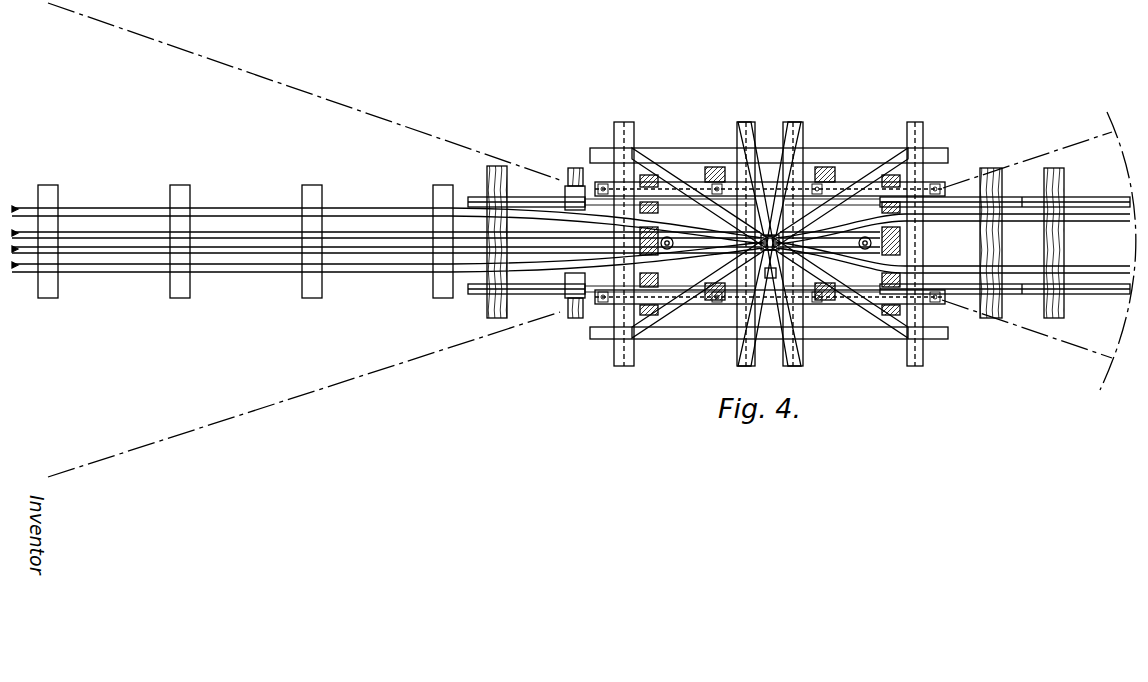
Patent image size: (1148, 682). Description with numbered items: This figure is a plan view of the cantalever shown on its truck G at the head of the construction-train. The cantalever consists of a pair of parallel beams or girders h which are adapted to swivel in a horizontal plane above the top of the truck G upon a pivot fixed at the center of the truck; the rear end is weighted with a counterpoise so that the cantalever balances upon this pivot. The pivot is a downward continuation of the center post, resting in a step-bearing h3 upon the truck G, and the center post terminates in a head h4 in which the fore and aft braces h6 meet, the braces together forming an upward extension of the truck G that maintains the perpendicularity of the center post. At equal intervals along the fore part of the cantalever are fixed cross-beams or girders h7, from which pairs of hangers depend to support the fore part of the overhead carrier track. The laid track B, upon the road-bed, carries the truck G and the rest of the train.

The parallel beams or girders h is at (245, 213).
The step-bearing h3 is at (770, 232).
The head h4 is at (771, 278).
The aft braces h6 is at (642, 157).
The cross-beams or girders h7 is at (58, 203).
The laid track B is at (487, 201).
The truck G is at (708, 150).